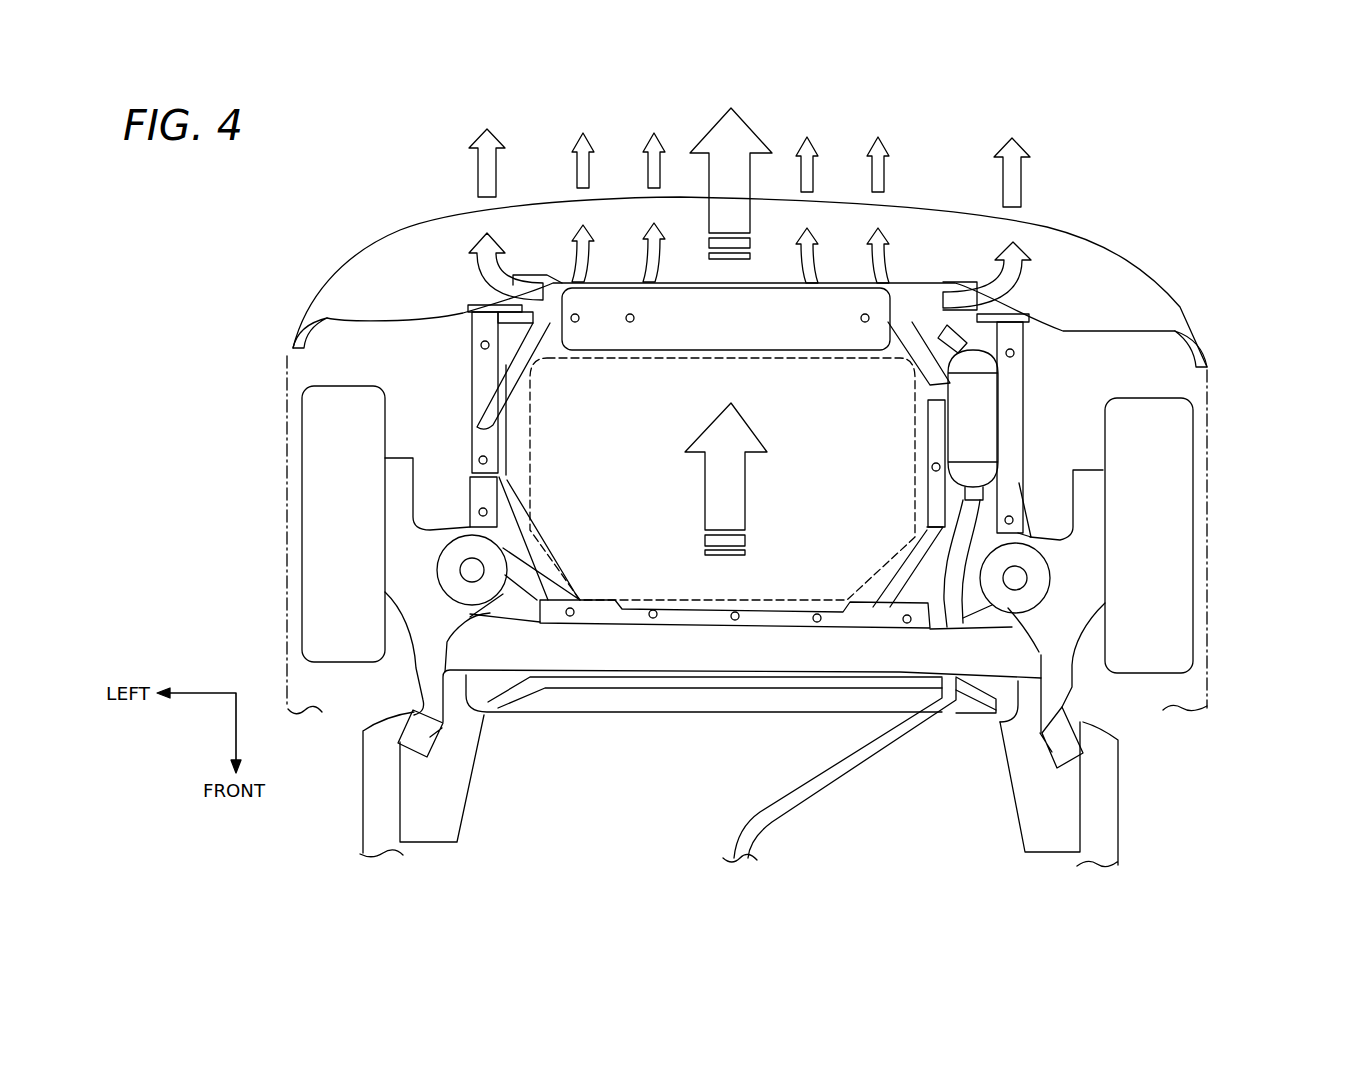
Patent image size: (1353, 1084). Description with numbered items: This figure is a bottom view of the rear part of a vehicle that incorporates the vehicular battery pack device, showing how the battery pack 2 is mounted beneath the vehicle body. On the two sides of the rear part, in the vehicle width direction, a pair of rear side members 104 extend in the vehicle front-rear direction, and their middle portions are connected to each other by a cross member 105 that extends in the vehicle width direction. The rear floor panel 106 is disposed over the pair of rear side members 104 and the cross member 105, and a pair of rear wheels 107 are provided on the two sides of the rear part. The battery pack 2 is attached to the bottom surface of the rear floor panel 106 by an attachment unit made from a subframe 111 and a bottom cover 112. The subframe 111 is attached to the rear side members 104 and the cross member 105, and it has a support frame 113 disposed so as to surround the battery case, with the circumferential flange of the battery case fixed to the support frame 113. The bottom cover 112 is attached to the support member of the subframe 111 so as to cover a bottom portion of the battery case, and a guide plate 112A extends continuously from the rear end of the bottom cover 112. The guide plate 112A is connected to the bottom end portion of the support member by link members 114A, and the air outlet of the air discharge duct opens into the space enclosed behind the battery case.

The battery pack 2 is at (820, 541).
The rear side members 104 is at (427, 789).
The cross member 105 is at (633, 680).
The rear floor panel 106 is at (963, 770).
The rear wheels 107 is at (300, 517).
The subframe 111 is at (1028, 372).
The bottom cover 112 is at (515, 413).
The guide plate 112A is at (830, 298).
The support frame 113 is at (480, 370).
The link members 114A is at (630, 314).